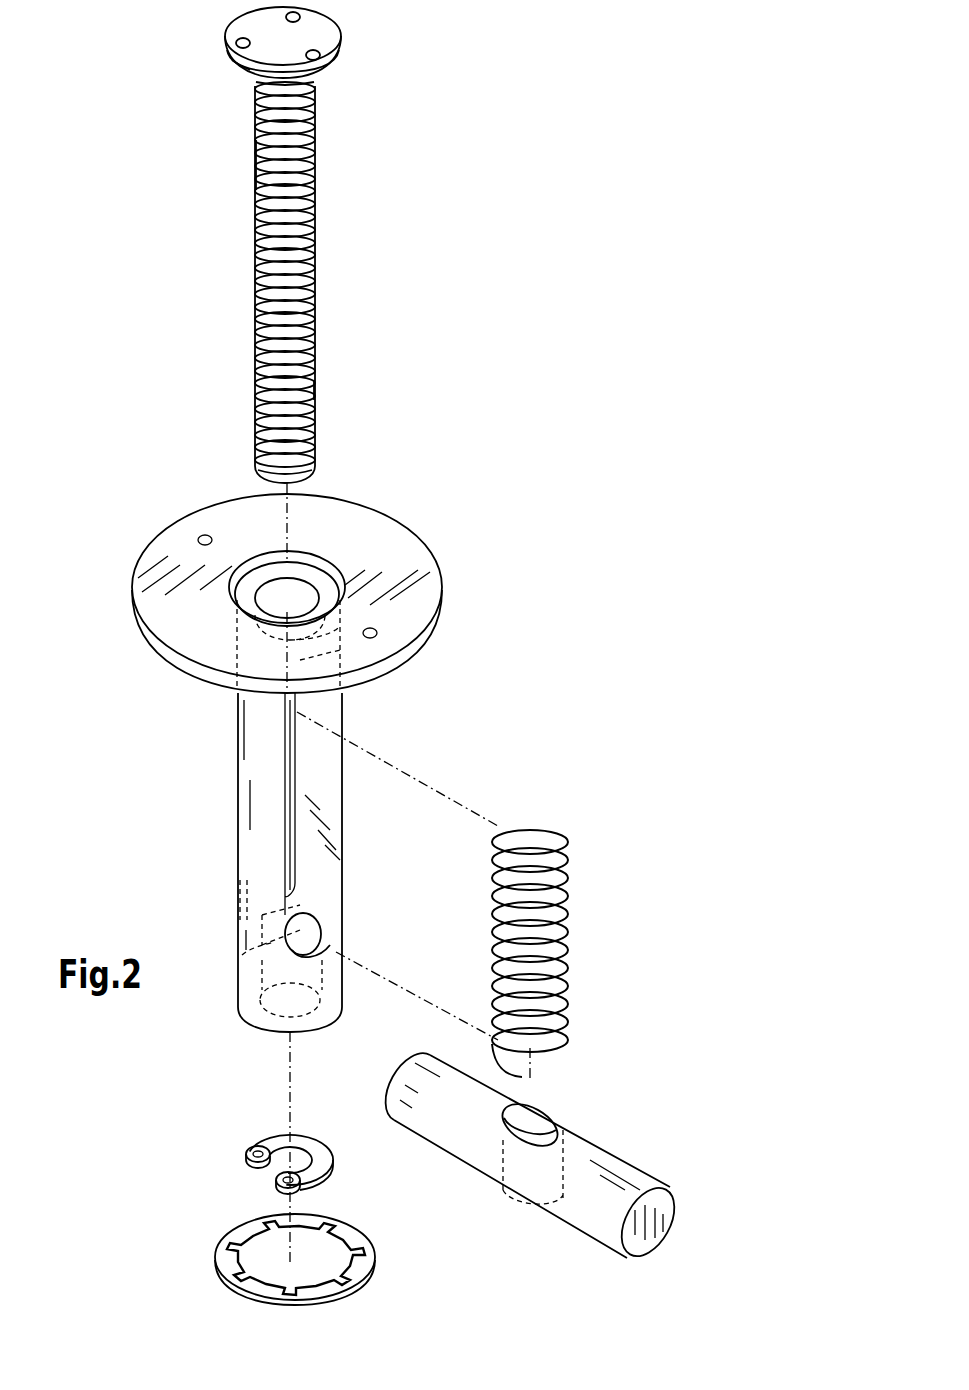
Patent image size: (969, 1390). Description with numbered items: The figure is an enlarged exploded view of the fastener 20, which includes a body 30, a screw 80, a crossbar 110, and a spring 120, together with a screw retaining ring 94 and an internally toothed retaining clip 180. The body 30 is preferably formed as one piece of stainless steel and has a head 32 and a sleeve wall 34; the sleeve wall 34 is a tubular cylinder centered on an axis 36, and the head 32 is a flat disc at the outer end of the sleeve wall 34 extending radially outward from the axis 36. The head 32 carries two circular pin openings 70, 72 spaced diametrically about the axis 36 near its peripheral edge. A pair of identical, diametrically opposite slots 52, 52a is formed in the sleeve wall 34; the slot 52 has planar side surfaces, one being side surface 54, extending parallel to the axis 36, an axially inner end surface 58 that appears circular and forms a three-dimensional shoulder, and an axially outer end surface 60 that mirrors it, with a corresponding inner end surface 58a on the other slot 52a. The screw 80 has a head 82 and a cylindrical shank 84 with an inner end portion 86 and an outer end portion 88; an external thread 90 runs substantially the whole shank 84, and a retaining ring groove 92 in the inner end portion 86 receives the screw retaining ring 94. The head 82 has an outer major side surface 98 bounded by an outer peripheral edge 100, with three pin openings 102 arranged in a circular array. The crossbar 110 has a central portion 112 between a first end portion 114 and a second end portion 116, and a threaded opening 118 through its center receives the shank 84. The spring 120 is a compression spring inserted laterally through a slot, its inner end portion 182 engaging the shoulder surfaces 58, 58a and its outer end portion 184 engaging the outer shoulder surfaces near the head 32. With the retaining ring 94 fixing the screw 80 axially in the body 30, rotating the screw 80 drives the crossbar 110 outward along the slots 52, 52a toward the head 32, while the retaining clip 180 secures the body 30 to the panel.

The fastener 20 is at (574, 480).
The body 30 is at (238, 862).
The head 32 is at (308, 598).
The sleeve wall 34 is at (236, 762).
The axis 36 is at (290, 1065).
The slot 52 is at (328, 720).
The slot 52a is at (240, 888).
The side surface 54 is at (332, 822).
The axially inner end surface 58 is at (330, 955).
The axially inner end surface 58a is at (252, 903).
The axially outer end surface 60 is at (314, 646).
The pin opening 70 is at (377, 633).
The pin opening 72 is at (198, 540).
The screw 80 is at (272, 244).
The head 82 is at (272, 56).
The shank 84 is at (322, 193).
The inner end portion 86 is at (316, 390).
The outer end portion 88 is at (317, 88).
The external thread 90 is at (253, 187).
The retaining ring groove 92 is at (259, 471).
The screw retaining ring 94 is at (237, 1157).
The outer major side surface 98 is at (315, 30).
The outer peripheral edge 100 is at (247, 68).
The pin openings 102 is at (306, 55).
The crossbar 110 is at (574, 1175).
The central portion 112 is at (520, 1200).
The first end portion 114 is at (405, 1135).
The second end portion 116 is at (590, 1245).
The threaded opening 118 is at (540, 1125).
The spring 120 is at (587, 933).
The retaining clip 180 is at (213, 1278).
The inner end portion 182 is at (568, 1028).
The outer end portion 184 is at (565, 836).